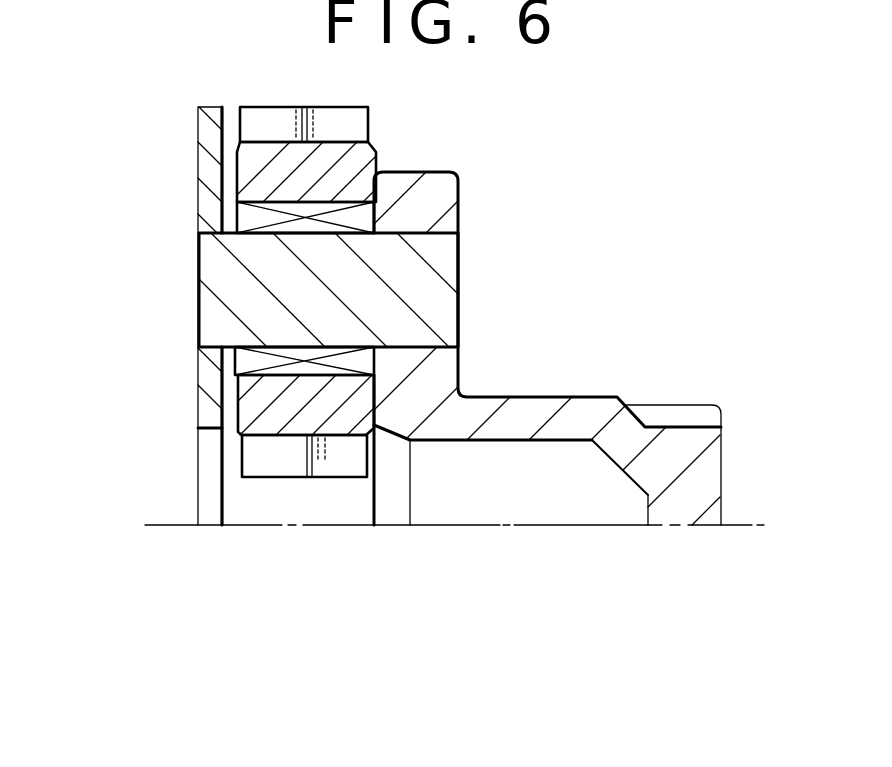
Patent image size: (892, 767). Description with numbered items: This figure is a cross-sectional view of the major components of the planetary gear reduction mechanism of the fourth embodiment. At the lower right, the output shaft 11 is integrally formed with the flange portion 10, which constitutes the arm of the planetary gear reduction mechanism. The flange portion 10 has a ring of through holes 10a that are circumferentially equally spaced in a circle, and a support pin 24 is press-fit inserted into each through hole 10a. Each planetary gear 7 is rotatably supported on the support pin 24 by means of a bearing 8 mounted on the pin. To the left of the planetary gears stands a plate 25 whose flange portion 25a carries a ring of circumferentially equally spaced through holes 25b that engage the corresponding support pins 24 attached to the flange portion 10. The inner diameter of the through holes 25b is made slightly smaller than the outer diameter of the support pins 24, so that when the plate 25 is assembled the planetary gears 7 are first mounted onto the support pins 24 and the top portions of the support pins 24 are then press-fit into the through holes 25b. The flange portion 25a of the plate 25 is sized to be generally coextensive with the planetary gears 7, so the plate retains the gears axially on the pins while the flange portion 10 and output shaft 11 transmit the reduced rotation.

The plate 25 is at (198, 138).
The flange portion of plate 25a is at (205, 165).
The through holes of plate 25b is at (212, 340).
The bearing 8 is at (243, 362).
The planetary gear 7 is at (255, 442).
The support pin 24 is at (440, 303).
The flange portion 10 is at (447, 190).
The through holes 10a is at (431, 232).
The output shaft 11 is at (700, 477).